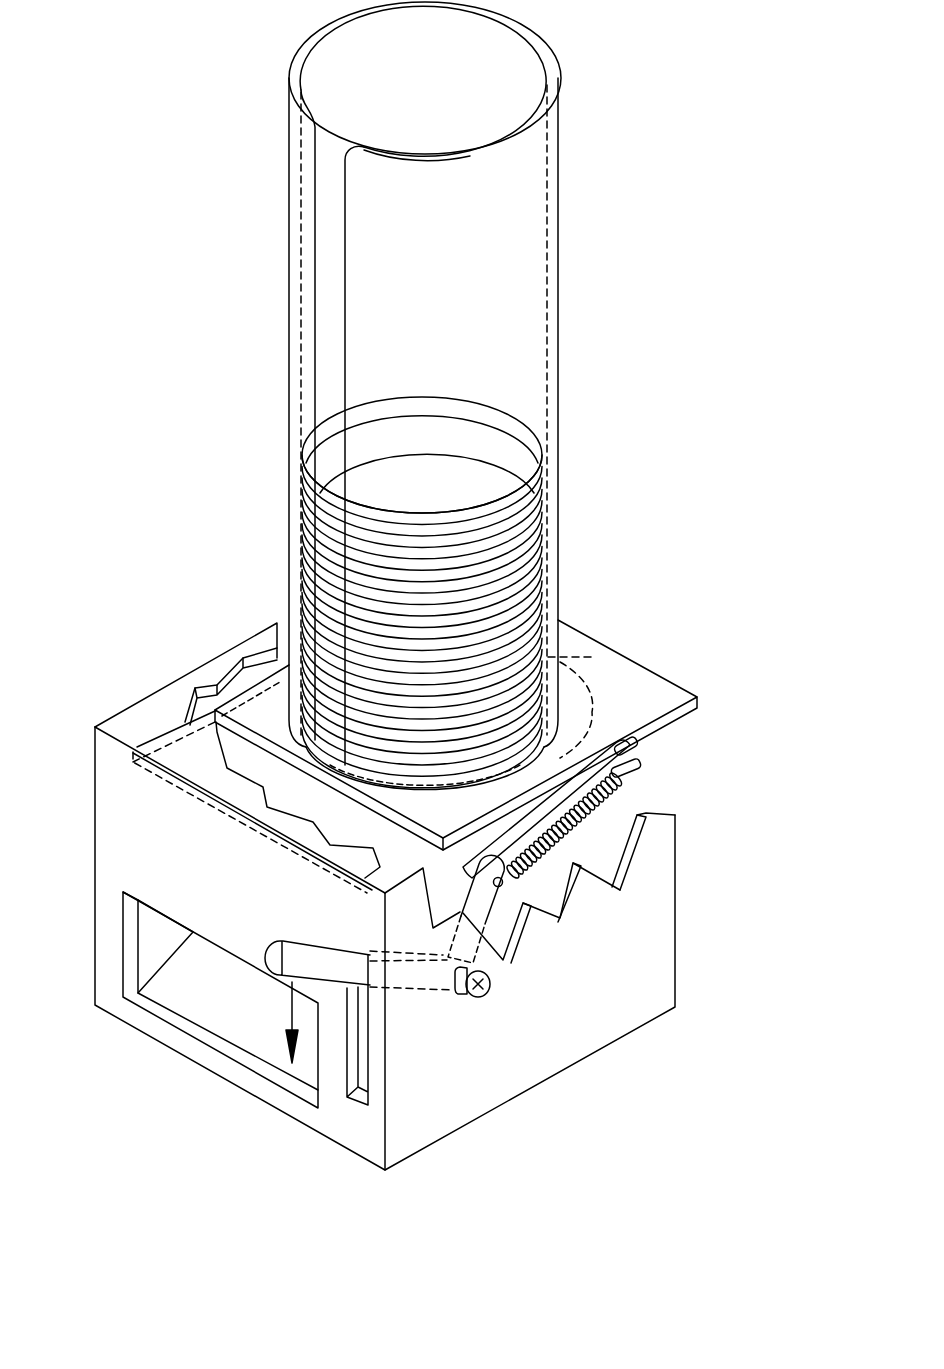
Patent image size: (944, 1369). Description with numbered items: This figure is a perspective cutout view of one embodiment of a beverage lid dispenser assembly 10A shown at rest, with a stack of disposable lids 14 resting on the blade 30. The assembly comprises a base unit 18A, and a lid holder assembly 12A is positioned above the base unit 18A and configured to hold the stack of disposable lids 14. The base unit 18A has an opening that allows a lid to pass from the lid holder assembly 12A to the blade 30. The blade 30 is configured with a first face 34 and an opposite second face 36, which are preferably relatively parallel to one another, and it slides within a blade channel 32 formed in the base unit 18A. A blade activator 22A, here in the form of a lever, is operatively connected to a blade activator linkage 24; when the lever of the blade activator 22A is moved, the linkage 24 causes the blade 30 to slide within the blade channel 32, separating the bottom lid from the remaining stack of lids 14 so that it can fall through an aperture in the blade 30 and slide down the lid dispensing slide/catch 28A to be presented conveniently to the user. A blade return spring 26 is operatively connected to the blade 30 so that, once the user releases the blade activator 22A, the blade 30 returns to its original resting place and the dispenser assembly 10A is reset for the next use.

The lid dispenser assembly 10A is at (629, 149).
The lid holder assembly 12A is at (561, 390).
The stack of disposable lids 14 is at (421, 433).
The base unit 18A is at (129, 710).
The blade activator 22A is at (296, 948).
The blade activator linkage 24 is at (504, 832).
The blade return spring 26 is at (625, 808).
The lid dispensing slide/catch 28A is at (165, 986).
The blade 30 is at (638, 645).
The blade channel 32 is at (176, 784).
The first face 34 is at (596, 722).
The second face 36 is at (663, 727).